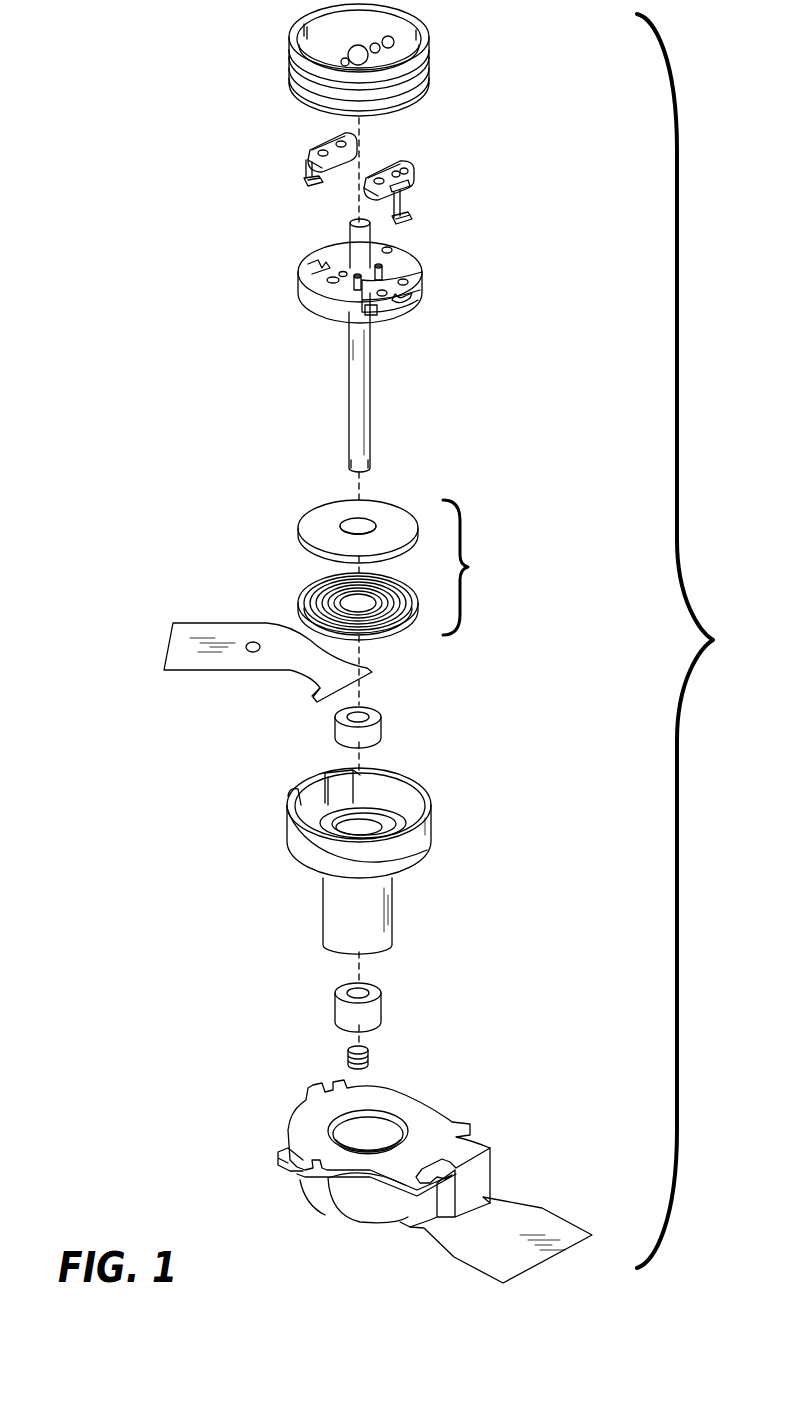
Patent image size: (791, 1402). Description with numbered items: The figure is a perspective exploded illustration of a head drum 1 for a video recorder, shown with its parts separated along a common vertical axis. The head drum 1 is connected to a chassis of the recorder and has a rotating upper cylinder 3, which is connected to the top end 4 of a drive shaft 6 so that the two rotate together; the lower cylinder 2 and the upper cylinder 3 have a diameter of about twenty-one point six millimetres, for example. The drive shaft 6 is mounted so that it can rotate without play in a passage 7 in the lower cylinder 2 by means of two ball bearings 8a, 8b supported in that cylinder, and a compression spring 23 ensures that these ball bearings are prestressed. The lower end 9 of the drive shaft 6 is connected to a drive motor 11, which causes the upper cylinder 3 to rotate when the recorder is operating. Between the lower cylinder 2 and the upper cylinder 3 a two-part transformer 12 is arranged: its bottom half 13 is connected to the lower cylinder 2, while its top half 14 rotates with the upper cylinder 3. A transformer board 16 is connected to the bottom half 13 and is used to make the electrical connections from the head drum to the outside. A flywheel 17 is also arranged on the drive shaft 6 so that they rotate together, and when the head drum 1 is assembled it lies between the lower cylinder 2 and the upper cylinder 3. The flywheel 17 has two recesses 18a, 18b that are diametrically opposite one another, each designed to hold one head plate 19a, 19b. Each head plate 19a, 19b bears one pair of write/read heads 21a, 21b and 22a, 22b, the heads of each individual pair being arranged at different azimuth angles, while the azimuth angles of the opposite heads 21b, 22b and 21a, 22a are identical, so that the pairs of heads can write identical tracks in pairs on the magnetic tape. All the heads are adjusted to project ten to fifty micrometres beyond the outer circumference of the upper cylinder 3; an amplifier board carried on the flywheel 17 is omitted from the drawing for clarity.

The head drum 1 is at (685, 641).
The lower cylinder 2 is at (369, 848).
The upper cylinder 3 is at (430, 72).
The top end 4 is at (350, 232).
The drive shaft 6 is at (370, 390).
The passage 7 is at (347, 828).
The ball bearing 8a is at (381, 732).
The ball bearing 8b is at (381, 1006).
The lower end 9 is at (370, 470).
The drive motor 11 is at (445, 1112).
The two-part transformer 12 is at (367, 571).
The bottom half 13 is at (395, 632).
The top half 14 is at (315, 502).
The transformer board 16 is at (173, 640).
The flywheel 17 is at (360, 292).
The recess 18a is at (418, 300).
The recess 18b is at (312, 264).
The head plate 19a is at (443, 201).
The head plate 19b is at (347, 140).
The write/read head 21a is at (402, 216).
The write/read head 21b is at (402, 224).
The write/read head 22a is at (304, 181).
The write/read head 22b is at (306, 176).
The compression spring 23 is at (372, 1058).